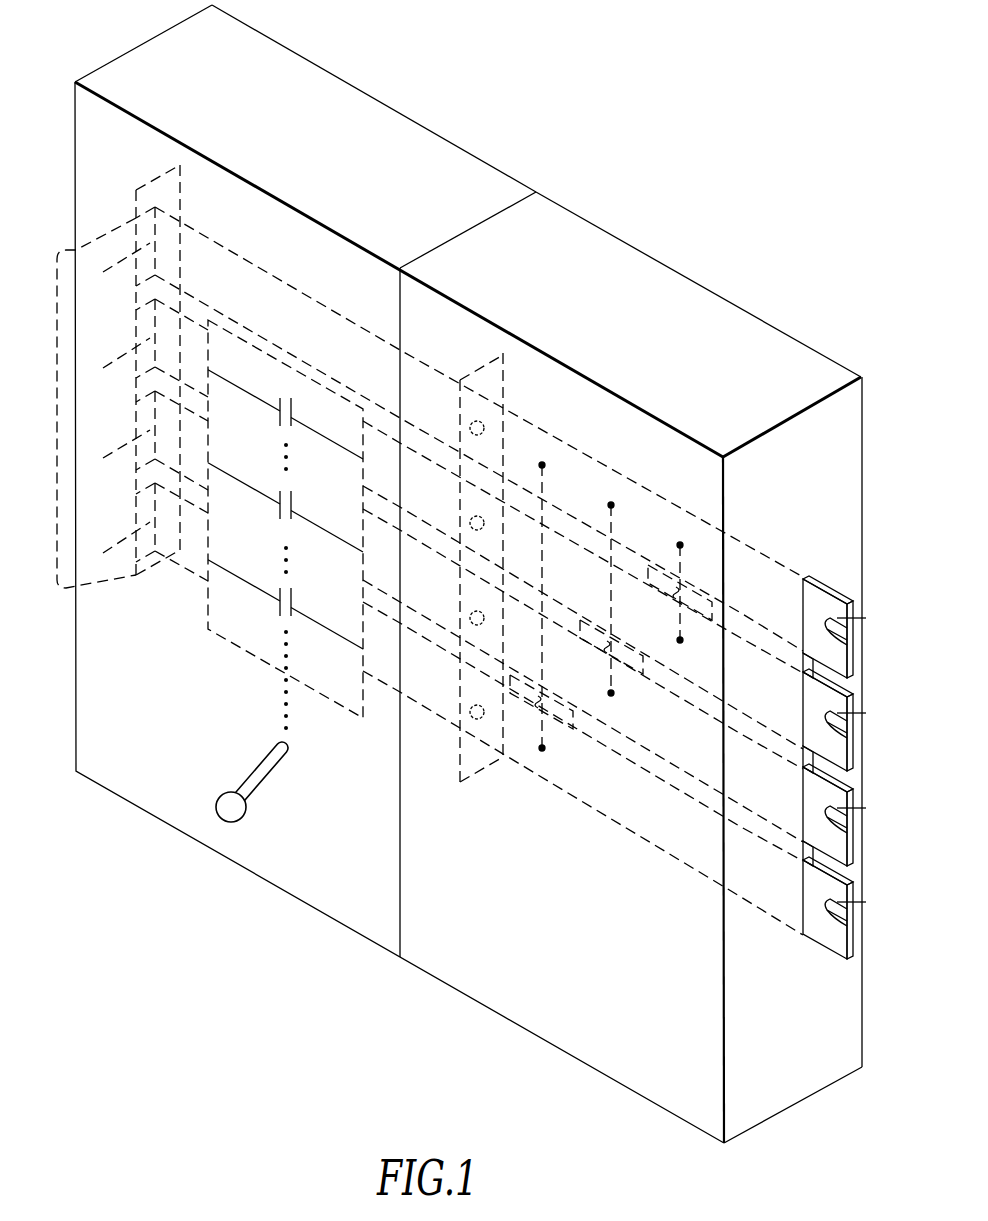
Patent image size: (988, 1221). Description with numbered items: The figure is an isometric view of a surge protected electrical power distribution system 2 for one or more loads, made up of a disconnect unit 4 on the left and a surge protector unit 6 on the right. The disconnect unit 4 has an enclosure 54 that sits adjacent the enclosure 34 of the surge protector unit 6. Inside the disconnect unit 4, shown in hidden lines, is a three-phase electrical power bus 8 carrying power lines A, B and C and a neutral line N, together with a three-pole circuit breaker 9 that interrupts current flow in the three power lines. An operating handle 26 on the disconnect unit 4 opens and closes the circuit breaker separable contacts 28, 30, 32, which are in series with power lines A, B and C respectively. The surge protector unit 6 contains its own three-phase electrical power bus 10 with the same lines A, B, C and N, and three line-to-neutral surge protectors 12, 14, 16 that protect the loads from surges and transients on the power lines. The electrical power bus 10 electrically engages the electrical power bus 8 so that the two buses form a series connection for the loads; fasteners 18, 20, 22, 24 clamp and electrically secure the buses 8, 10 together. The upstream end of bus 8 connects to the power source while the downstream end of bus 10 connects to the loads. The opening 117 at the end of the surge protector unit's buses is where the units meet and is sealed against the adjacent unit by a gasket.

The surge protected electrical power distribution system 2 is at (392, 1008).
The disconnect unit 4 is at (322, 66).
The surge protector unit 6 is at (646, 254).
The three-phase electrical power bus 8 is at (49, 424).
The three-pole circuit breaker 9 is at (242, 658).
The three-phase electrical power bus 10 is at (856, 948).
The line-to-neutral surge protector 12 is at (660, 566).
The line-to-neutral surge protector 14 is at (634, 662).
The line-to-neutral surge protector 16 is at (565, 722).
The fastener 18 is at (469, 422).
The fastener 20 is at (469, 517).
The fastener 22 is at (469, 612).
The fastener 24 is at (469, 706).
The operating handle 26 is at (266, 787).
The circuit breaker separable contacts 28 is at (280, 423).
The circuit breaker separable contacts 30 is at (281, 516).
The circuit breaker separable contacts 32 is at (288, 598).
The enclosure 34 is at (724, 297).
The enclosure 54 is at (400, 110).
The opening 117 is at (462, 786).